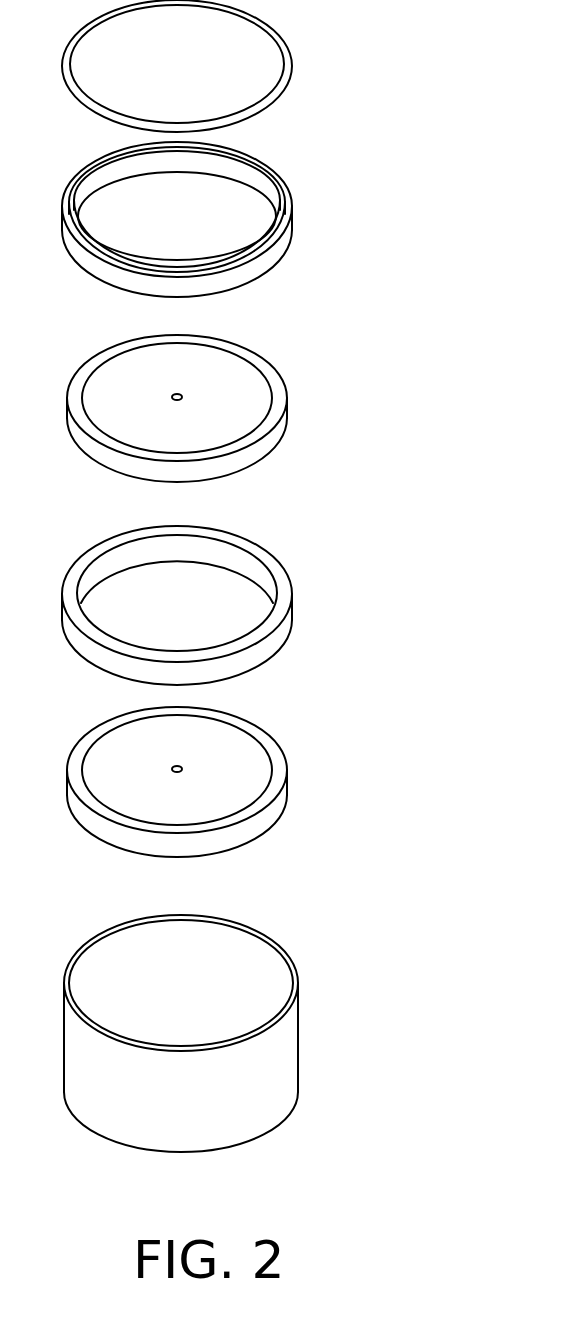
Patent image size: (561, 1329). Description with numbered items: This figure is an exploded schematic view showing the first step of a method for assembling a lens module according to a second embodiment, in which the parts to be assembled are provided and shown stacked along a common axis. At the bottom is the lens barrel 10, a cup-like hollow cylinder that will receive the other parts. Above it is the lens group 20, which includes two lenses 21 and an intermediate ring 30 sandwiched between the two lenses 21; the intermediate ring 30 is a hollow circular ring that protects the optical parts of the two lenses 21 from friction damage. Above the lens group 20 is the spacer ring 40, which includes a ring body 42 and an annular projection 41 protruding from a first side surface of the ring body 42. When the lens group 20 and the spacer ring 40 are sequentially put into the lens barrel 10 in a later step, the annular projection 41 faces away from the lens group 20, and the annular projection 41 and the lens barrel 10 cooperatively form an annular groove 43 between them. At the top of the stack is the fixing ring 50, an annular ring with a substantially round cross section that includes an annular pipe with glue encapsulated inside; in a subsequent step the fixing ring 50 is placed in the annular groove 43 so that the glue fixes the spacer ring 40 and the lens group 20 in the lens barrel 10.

The lens barrel 10 is at (258, 1072).
The lens group 20 is at (274, 596).
The lens 21 is at (277, 435).
The intermediate ring 30 is at (283, 592).
The spacer ring 40 is at (246, 234).
The annular projection 41 is at (276, 222).
The ring body 42 is at (286, 245).
The annular groove 43 is at (253, 258).
The fixing ring 50 is at (288, 72).